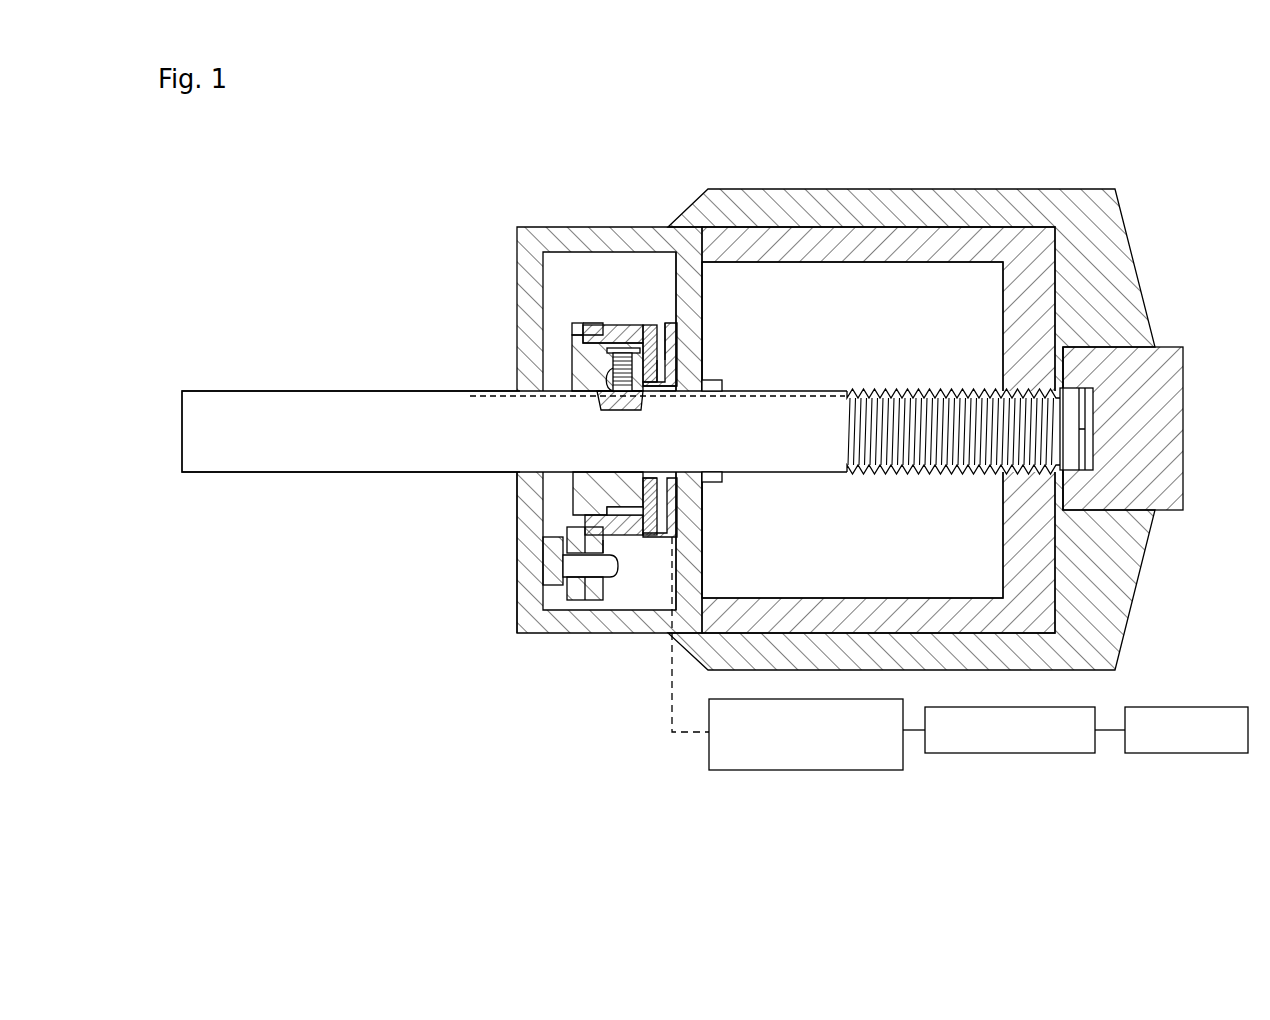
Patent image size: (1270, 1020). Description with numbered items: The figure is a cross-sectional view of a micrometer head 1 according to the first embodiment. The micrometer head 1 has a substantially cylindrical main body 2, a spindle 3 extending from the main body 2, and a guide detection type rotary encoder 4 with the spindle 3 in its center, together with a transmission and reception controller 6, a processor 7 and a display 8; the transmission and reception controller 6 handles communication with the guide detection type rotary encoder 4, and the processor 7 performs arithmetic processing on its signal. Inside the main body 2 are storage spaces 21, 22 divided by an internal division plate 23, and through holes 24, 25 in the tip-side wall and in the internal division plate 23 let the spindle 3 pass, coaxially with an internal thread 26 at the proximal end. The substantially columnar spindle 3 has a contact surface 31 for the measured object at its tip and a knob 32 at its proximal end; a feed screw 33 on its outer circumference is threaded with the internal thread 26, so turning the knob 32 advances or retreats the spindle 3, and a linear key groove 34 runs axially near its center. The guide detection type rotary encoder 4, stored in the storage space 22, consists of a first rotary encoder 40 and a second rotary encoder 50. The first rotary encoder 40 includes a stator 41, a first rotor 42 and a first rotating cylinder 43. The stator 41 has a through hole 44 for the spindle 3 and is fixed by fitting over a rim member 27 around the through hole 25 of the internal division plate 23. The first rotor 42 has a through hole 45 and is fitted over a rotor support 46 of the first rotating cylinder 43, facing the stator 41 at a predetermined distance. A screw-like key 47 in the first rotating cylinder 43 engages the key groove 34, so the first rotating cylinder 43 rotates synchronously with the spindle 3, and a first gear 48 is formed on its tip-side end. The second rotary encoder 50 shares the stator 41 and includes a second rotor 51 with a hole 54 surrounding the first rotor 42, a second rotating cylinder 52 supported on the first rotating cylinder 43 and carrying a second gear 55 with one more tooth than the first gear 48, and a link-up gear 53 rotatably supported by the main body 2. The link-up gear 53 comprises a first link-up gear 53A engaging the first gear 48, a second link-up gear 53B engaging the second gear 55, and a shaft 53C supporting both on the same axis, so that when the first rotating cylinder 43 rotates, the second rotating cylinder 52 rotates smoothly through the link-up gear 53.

The micrometer head 1 is at (1021, 167).
The main body 2 is at (836, 240).
The storage space 21 is at (891, 299).
The storage space 22 is at (631, 579).
The internal division plate 23 is at (700, 550).
The through hole 24 is at (520, 472).
The through hole 25 is at (712, 388).
The internal thread 26 is at (1010, 398).
The rim member 27 is at (668, 392).
The spindle 3 is at (783, 471).
The contact surface 31 is at (182, 418).
The knob 32 is at (1180, 432).
The feed screw 33 is at (911, 475).
The key groove 34 is at (470, 396).
The guide detection type rotary encoder 4 is at (566, 295).
The first rotary encoder 40 is at (607, 363).
The second rotary encoder 50 is at (608, 493).
The stator 41 is at (672, 323).
The first rotor 42 is at (655, 375).
The first rotating cylinder 43 is at (585, 373).
The through hole 44 is at (677, 386).
The through hole 45 is at (652, 475).
The rotor support 46 is at (638, 396).
The key 47 is at (600, 398).
The first gear 48 is at (575, 330).
The second rotor 51 is at (648, 323).
The second rotating cylinder 52 is at (617, 325).
The link-up gear 53 is at (556, 625).
The first link-up gear 53A is at (567, 602).
The second link-up gear 53B is at (585, 601).
The shaft 53C is at (598, 630).
The hole 54 is at (665, 356).
The second gear 55 is at (597, 323).
The transmission and reception controller 6 is at (806, 772).
The processor 7 is at (1010, 755).
The display 8 is at (1188, 755).